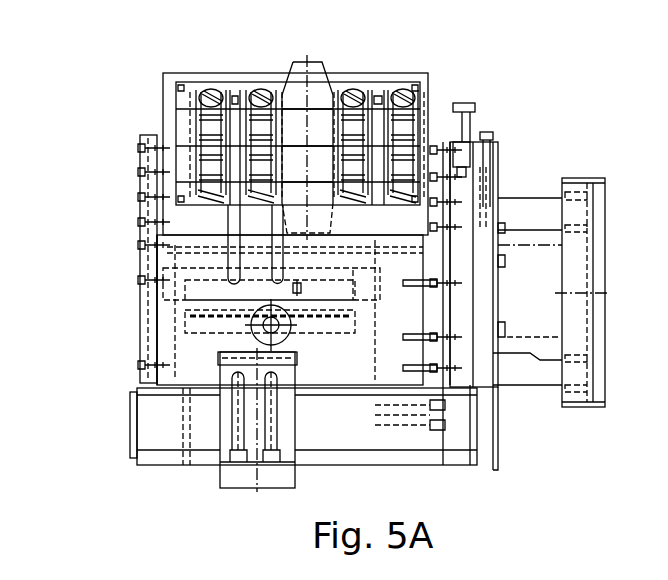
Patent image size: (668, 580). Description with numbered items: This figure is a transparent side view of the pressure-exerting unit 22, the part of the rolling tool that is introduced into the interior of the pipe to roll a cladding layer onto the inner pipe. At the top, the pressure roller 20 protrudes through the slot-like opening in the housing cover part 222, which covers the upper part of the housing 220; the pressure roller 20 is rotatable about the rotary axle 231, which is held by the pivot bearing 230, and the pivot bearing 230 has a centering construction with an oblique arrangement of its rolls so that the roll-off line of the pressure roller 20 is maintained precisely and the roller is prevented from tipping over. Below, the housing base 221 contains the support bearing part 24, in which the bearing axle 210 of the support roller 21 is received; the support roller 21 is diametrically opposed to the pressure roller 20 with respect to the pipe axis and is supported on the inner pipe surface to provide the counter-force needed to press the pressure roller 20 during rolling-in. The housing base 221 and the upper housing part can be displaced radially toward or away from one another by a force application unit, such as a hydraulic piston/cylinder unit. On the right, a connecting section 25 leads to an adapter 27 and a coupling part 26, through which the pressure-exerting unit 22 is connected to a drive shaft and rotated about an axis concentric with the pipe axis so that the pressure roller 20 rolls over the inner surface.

The pressure roller 20 is at (320, 68).
The support roller 21 is at (230, 477).
The pressure-exerting unit 22 is at (123, 258).
The support bearing part 24 is at (170, 340).
The connecting section 25 is at (492, 107).
The coupling part 26 is at (583, 172).
The adapter 27 is at (498, 160).
The bearing axle 210 is at (130, 437).
The housing 220 is at (143, 197).
The housing base 221 is at (135, 315).
The housing cover part 222 is at (423, 77).
The pivot bearing 230 is at (157, 97).
The rotary axle 231 is at (176, 127).